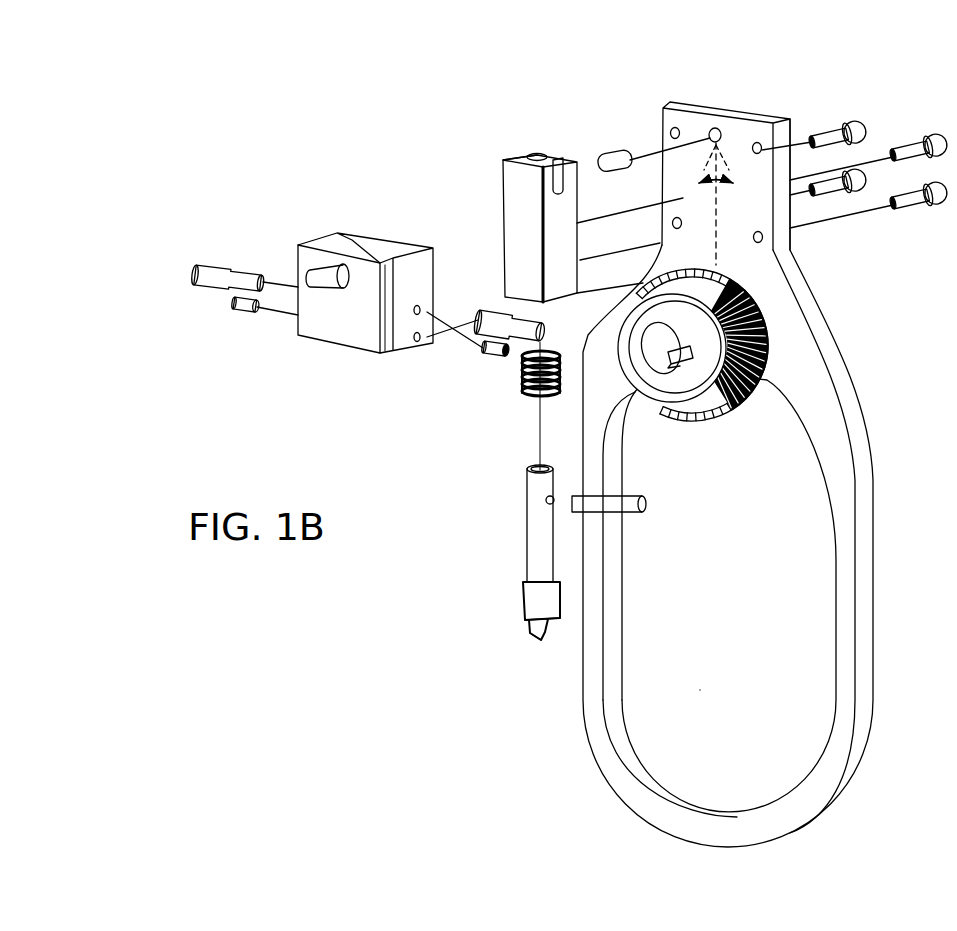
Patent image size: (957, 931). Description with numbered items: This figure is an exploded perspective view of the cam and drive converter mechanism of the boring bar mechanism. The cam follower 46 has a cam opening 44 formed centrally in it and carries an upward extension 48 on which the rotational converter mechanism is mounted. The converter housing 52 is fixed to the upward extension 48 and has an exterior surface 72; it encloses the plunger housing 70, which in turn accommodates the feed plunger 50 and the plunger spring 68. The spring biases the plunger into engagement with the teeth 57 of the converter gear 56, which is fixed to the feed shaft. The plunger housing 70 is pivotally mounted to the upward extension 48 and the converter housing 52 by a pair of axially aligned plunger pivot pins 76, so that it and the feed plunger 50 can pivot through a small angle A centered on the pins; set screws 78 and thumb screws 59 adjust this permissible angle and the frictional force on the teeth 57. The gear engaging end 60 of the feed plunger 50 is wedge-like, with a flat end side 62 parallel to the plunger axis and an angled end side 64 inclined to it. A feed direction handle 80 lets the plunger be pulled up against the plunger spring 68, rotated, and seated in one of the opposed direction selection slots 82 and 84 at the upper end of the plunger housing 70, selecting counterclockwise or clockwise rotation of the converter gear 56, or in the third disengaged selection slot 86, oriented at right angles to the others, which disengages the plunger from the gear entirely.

The cam opening 44 is at (764, 631).
The cam follower 46 is at (812, 771).
The upward extension 48 is at (778, 142).
The feed plunger 50 is at (533, 532).
The converter housing 52 is at (330, 215).
The converter gear 56 is at (658, 415).
The teeth 57 is at (763, 316).
The thumb screws 59 is at (187, 276).
The gear engaging end 60 is at (497, 632).
The flat end side 62 is at (543, 630).
The angled end side 64 is at (531, 637).
The plunger spring 68 is at (518, 397).
The plunger housing 70 is at (503, 255).
The exterior surface 72 is at (348, 349).
The plunger pivot pin 76 is at (605, 150).
The set screws 78 is at (230, 313).
The feed direction handle 80 is at (630, 515).
The direction selection slot 82 is at (557, 195).
The direction selection slot 84 is at (523, 157).
The disengaged selection slot 86 is at (553, 158).